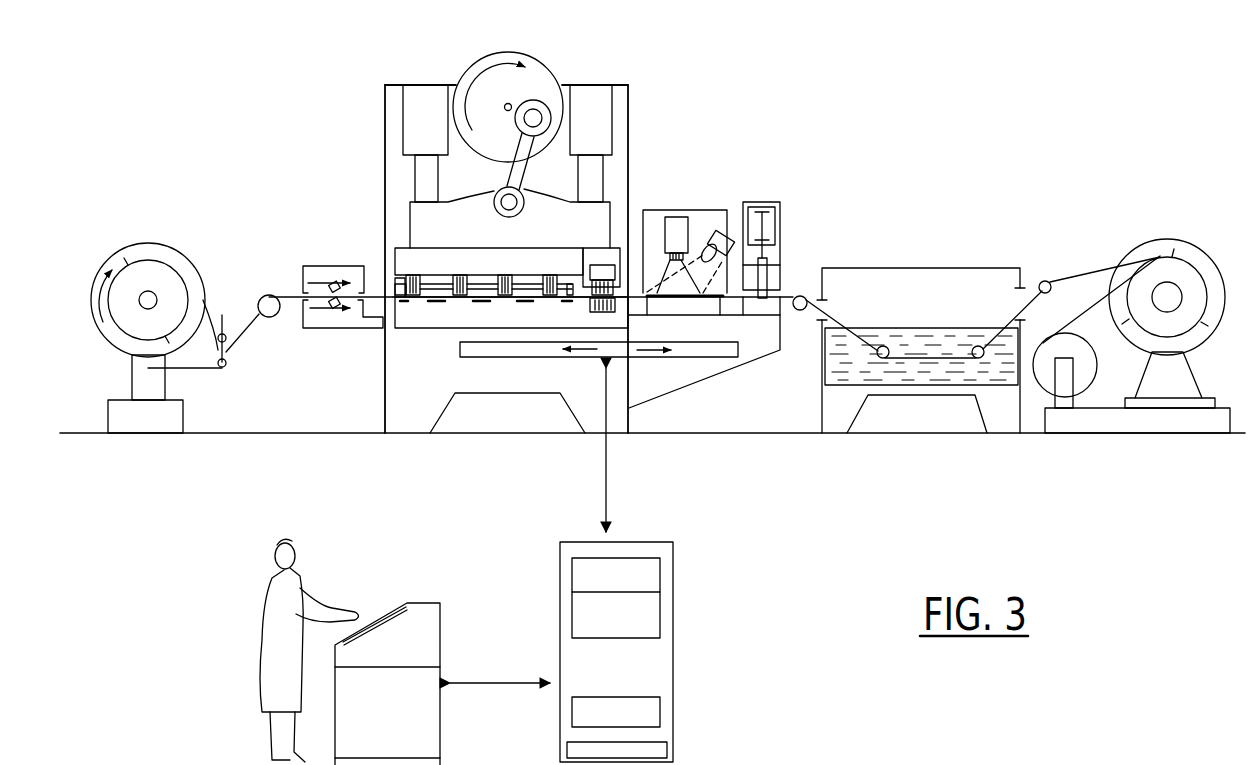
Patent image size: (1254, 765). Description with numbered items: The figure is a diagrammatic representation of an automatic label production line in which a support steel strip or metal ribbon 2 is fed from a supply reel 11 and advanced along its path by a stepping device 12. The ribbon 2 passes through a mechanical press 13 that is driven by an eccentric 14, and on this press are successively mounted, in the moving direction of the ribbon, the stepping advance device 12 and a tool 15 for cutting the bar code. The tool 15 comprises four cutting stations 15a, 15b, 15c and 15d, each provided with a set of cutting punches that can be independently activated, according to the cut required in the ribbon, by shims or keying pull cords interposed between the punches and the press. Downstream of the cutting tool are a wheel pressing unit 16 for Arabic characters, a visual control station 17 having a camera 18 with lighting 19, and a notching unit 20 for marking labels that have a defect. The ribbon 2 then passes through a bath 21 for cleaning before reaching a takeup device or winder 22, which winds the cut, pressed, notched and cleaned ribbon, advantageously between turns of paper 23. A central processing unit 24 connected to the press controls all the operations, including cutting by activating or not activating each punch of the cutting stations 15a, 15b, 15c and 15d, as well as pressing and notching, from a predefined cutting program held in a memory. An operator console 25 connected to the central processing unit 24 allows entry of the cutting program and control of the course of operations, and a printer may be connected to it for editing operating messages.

The metal ribbon 2 is at (247, 302).
The supply reel 11 is at (194, 262).
The stepping device 12 is at (341, 266).
The mechanical press 13 is at (385, 126).
The eccentric 14 is at (543, 62).
The tool for cutting the bar code 15 is at (476, 212).
The cutting station 15a is at (413, 275).
The cutting station 15b is at (460, 275).
The cutting station 15c is at (505, 275).
The cutting station 15d is at (550, 275).
The wheel pressing unit 16 is at (594, 262).
The visual control station 17 is at (653, 210).
The camera 18 is at (678, 227).
The lighting 19 is at (733, 228).
The notching unit 20 is at (775, 203).
The bath 21 is at (843, 372).
The takeup device or winder 22 is at (1160, 240).
The turns of paper 23 is at (1093, 292).
The central processing unit 24 is at (675, 584).
The operator console 25 is at (418, 600).